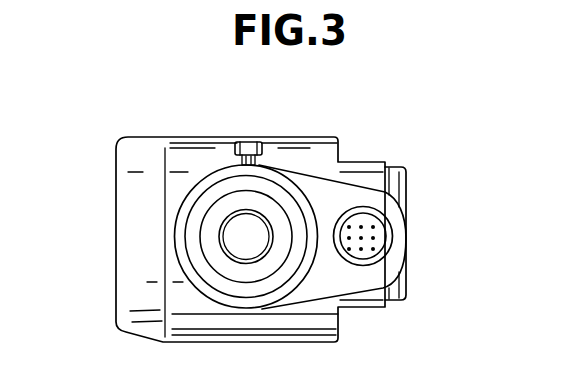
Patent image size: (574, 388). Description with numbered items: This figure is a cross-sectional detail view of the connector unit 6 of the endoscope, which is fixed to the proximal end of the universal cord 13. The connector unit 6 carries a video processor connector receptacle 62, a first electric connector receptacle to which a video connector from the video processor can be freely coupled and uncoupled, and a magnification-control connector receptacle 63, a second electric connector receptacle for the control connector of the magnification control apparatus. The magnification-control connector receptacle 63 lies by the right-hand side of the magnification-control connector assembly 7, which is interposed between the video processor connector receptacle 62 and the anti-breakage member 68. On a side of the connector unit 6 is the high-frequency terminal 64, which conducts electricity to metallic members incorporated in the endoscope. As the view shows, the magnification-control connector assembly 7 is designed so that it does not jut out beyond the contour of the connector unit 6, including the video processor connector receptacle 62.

The connector unit 6 is at (160, 138).
The magnification-control connector assembly 7 is at (321, 192).
The universal cord 13 is at (238, 245).
The video processor connector receptacle 62 is at (408, 291).
The magnification-control connector receptacle 63 is at (366, 198).
The high-frequency terminal 64 is at (250, 142).
The anti-breakage member 68 is at (195, 221).